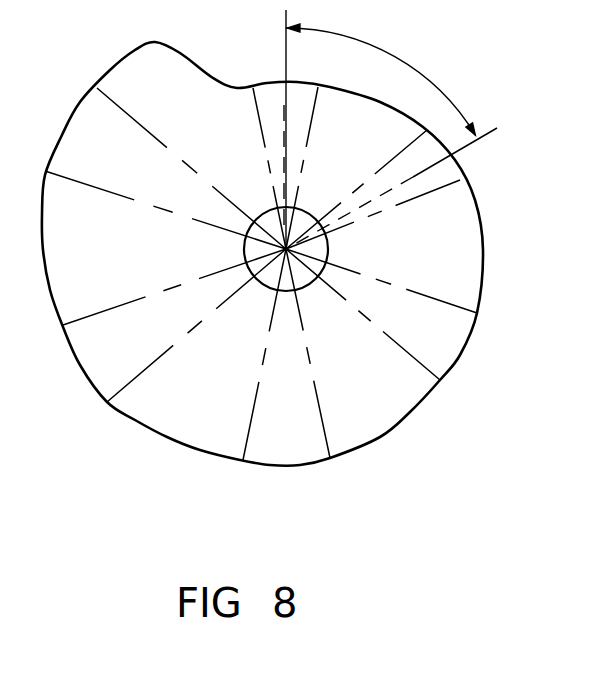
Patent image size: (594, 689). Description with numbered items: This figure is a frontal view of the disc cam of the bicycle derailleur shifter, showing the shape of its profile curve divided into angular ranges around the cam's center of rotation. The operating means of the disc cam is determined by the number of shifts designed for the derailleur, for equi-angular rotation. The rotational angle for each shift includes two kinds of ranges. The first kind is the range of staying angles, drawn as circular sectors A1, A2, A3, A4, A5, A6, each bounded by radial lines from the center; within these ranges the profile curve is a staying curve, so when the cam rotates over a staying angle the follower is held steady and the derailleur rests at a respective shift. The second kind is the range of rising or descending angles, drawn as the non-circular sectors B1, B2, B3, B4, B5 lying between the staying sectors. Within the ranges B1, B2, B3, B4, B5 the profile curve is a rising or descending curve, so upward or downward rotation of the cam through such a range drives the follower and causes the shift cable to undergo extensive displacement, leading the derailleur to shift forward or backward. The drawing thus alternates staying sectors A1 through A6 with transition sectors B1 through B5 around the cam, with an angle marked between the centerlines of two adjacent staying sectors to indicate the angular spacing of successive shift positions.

The staying angle sector A1 is at (272, 100).
The staying angle sector A2 is at (447, 180).
The staying angle sector A3 is at (381, 314).
The staying angle sector A4 is at (286, 354).
The staying angle sector A5 is at (174, 325).
The staying angle sector A6 is at (165, 168).
The rising or descending angle sector B1 is at (360, 147).
The rising or descending angle sector B2 is at (411, 250).
The rising or descending angle sector B3 is at (356, 363).
The rising or descending angle sector B4 is at (223, 367).
The rising or descending angle sector B5 is at (151, 255).